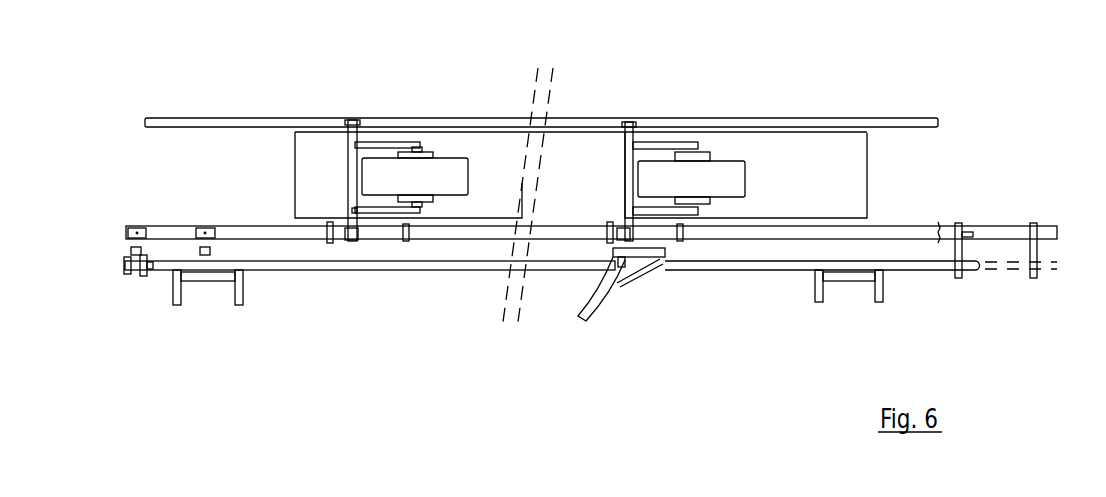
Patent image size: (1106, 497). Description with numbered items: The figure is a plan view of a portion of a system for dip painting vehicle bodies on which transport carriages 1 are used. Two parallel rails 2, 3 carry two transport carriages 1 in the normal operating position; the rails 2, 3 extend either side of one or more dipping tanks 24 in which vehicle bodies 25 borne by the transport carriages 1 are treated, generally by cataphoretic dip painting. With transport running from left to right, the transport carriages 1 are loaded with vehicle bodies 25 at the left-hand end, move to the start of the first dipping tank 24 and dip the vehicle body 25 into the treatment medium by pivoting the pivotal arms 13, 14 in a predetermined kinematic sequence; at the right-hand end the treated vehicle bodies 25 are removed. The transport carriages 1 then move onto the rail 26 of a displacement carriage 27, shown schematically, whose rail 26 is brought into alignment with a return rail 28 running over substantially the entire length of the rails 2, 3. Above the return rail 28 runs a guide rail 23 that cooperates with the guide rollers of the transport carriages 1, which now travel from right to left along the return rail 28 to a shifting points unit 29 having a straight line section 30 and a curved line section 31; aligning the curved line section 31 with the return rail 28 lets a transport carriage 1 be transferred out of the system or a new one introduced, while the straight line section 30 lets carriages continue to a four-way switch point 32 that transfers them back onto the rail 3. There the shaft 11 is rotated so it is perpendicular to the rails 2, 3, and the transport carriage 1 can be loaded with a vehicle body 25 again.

The transport carriage 1 is at (400, 170).
The rail 2 is at (245, 119).
The rail 3 is at (245, 232).
The shaft 11 is at (627, 183).
The pivotal arm 13 is at (372, 140).
The pivotal arm 14 is at (392, 215).
The guide rail 23 is at (483, 263).
The dipping tank 24 is at (320, 128).
The vehicle body 25 is at (445, 176).
The rail of the displacement carriage 26 is at (1007, 228).
The displacement carriage 27 is at (1005, 262).
The return rail 28 is at (918, 268).
The shifting points unit 29 is at (638, 282).
The straight line section 30 is at (628, 278).
The curved line section 31 is at (645, 265).
The four-way switch point 32 is at (181, 252).